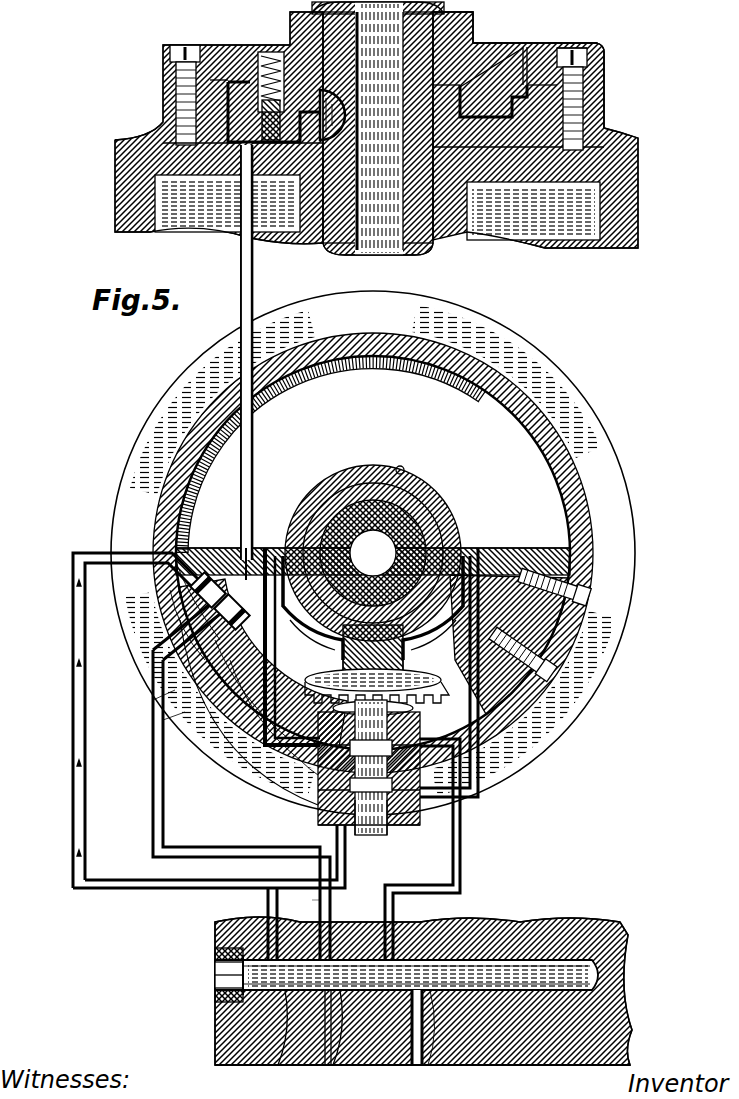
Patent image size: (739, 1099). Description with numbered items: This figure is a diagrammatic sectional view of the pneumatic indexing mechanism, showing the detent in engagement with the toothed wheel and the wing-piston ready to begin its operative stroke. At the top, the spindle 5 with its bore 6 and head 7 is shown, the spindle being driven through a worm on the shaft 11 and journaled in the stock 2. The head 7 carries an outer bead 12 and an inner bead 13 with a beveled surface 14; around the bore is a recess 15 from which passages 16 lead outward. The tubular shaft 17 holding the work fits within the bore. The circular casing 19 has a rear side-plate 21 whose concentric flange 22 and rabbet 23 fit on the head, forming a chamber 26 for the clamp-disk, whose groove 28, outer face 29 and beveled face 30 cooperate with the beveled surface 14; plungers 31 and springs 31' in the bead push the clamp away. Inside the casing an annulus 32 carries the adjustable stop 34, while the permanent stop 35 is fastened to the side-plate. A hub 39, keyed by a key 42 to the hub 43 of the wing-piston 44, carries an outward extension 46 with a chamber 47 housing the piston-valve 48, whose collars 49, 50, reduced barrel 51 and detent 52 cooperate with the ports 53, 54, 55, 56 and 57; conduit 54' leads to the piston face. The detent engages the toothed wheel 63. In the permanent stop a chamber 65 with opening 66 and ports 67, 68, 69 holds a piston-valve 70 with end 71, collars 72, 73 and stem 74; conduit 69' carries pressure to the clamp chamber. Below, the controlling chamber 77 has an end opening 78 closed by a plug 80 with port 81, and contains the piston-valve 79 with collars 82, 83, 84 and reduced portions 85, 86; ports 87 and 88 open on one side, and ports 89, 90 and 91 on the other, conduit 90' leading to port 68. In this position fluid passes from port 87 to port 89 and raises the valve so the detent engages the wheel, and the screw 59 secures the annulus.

The stock 2 is at (522, 1068).
The spindle 5 is at (474, 30).
The bore 6 is at (478, 45).
The head 7 is at (604, 75).
The shaft 11 is at (430, 512).
The bead 12 is at (165, 70).
The bead 13 is at (268, 90).
The beveled surface 14 is at (178, 95).
The recess 15 is at (240, 160).
The passages 16 is at (522, 58).
The tubular shaft 17 is at (340, 252).
The circular casing 19 is at (612, 165).
The rear side-plate 21 is at (510, 125).
The concentric flange 22 is at (220, 110).
The rabbet 23 is at (586, 96).
The chamber 26 is at (232, 180).
The groove 28 is at (545, 55).
The outer face 29 is at (540, 190).
The beveled face 30 is at (228, 118).
The plungers 31 is at (246, 67).
The springs 31' is at (302, 70).
The annulus 32 is at (535, 413).
The stop or abutment 34 is at (585, 585).
The stop or abutment 35 is at (178, 548).
The hub 39 is at (400, 485).
The key 42 is at (382, 470).
The hub 43 is at (420, 505).
The wing-piston 44 is at (405, 648).
The outward extension 46 is at (390, 825).
The chamber 47 is at (400, 800).
The piston-valve 48 is at (372, 830).
The collar 49 is at (280, 740).
The collar 50 is at (318, 812).
The reduced barrel 51 is at (318, 780).
The tooth or detent 52 is at (410, 706).
The port 53 is at (320, 826).
The port 54 is at (292, 646).
The conduit 54' is at (370, 621).
The port 55 is at (420, 740).
The port 56 is at (300, 760).
The port 57 is at (474, 800).
The screw 59 is at (470, 672).
The toothed wheel 63 is at (377, 686).
The chamber 65 is at (210, 580).
The opening 66 is at (236, 630).
The port 67 is at (205, 596).
The port 68 is at (215, 628).
The port 69 is at (261, 547).
The conduit 69' is at (266, 352).
The piston-valve 70 is at (268, 632).
The end 71 is at (262, 652).
The collar 72 is at (185, 690).
The collar 73 is at (300, 690).
The reduced stem 74 is at (190, 710).
The chamber 77 is at (228, 1010).
The end opening 78 is at (216, 952).
The piston-valve 79 is at (406, 975).
The plug 80 is at (216, 992).
The port 81 is at (218, 970).
The collar 82 is at (240, 995).
The collar 83 is at (325, 1043).
The collar 84 is at (428, 1066).
The reduced portion 85 is at (280, 1062).
The reduced portion 86 is at (380, 1062).
The port 87 is at (333, 1062).
The port 88 is at (417, 1066).
The port 89 is at (268, 905).
The port 90 is at (308, 911).
The conduit 90' is at (241, 780).
The port 91 is at (385, 913).